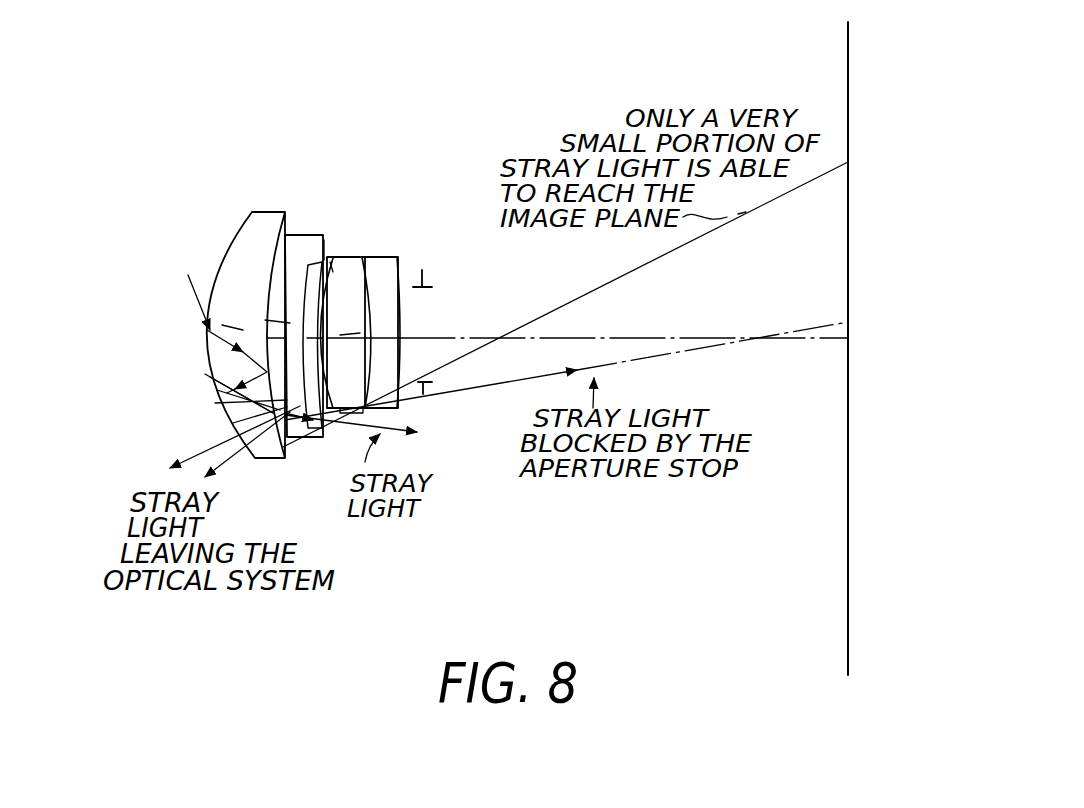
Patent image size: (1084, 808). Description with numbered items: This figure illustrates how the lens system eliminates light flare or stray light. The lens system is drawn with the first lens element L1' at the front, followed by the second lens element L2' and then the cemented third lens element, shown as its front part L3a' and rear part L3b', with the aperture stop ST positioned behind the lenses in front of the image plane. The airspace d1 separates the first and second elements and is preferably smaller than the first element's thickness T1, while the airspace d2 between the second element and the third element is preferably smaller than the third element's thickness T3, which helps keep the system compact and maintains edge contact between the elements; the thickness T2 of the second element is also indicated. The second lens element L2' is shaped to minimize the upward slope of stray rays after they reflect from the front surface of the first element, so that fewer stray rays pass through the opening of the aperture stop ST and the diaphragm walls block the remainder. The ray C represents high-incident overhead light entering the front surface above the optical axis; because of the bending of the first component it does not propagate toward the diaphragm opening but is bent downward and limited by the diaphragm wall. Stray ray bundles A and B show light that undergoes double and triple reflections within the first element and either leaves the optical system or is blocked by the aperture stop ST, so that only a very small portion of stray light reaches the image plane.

The first lens element L1' is at (246, 335).
The second lens element L2' is at (305, 336).
The third lens element front part L3a' is at (373, 320).
The third lens element rear part L3b' is at (428, 320).
The airspace d1 is at (328, 253).
The airspace d2 is at (335, 272).
The aperture stop ST is at (433, 283).
The thickness of the first lens element T1 is at (243, 330).
The second lens frame T2 is at (290, 323).
The thickness of the third lens element T3 is at (340, 335).
The stray light ray A is at (208, 364).
The stray light ray B is at (204, 346).
The ray C is at (201, 278).